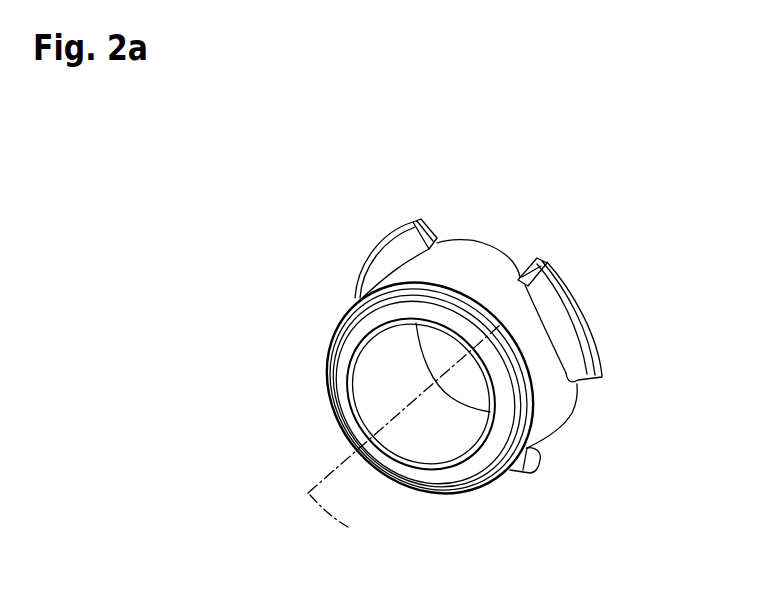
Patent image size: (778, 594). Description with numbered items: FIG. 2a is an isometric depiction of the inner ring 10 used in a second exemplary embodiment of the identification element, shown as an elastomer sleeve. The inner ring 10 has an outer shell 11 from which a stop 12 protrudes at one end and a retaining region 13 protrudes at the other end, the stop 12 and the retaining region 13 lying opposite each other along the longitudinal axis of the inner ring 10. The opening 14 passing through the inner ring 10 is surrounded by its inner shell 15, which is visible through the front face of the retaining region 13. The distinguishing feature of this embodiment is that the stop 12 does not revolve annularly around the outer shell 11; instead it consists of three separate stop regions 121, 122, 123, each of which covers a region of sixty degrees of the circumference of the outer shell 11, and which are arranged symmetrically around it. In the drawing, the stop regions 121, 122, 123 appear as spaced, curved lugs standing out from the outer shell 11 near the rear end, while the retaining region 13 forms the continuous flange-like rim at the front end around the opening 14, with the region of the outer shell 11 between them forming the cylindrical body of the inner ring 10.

The inner ring 10 is at (495, 369).
The outer shell 11 is at (478, 256).
The stop 12 is at (505, 360).
The stop region 121 is at (400, 245).
The stop region 122 is at (583, 347).
The stop region 123 is at (523, 477).
The retaining region 13 is at (348, 332).
The opening 14 is at (477, 394).
The inner shell 15 is at (377, 377).